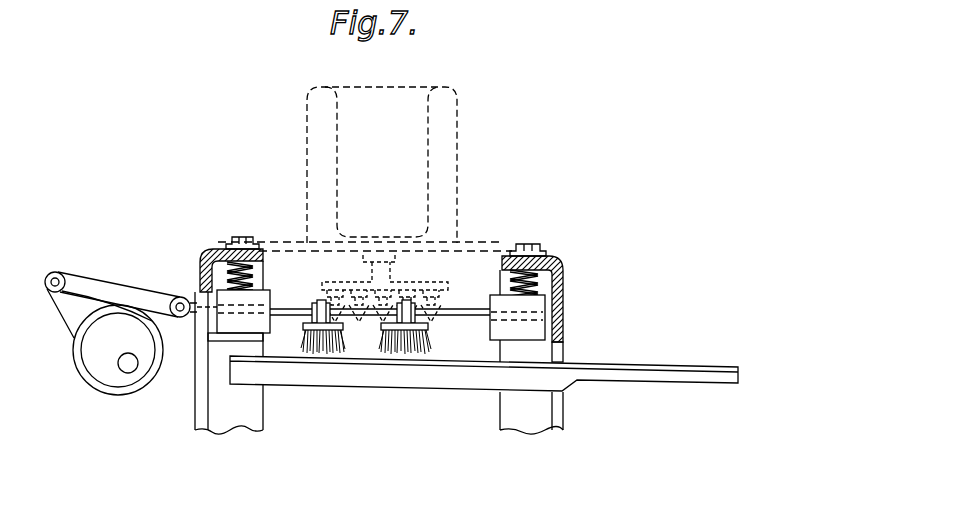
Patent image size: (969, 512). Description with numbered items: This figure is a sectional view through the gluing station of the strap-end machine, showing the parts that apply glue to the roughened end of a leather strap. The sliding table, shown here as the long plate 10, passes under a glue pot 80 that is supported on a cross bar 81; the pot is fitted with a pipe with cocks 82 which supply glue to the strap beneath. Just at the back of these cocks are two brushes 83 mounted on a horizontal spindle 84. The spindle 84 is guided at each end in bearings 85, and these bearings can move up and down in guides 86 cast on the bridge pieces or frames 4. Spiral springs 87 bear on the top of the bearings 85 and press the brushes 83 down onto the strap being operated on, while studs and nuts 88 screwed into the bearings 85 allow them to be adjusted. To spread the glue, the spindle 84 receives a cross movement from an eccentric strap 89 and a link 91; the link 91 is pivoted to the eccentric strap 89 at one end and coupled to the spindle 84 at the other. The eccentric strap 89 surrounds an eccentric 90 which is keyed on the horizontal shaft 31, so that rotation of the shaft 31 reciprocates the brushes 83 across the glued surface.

The frames 4 is at (379, 347).
The tray 10 is at (637, 372).
The horizontal shaft 31 is at (128, 367).
The glue pot 80 is at (382, 165).
The cross bar 81 is at (480, 246).
The pipe with cocks 82 is at (386, 299).
The brushes 83 is at (400, 346).
The horizontal spindle 84 is at (473, 312).
The bearings 85 is at (381, 301).
The guides 86 is at (556, 352).
The spiral springs 87 is at (564, 270).
The studs and nuts 88 is at (386, 234).
The eccentric strap 89 is at (73, 318).
The eccentric 90 is at (118, 350).
The link 91 is at (118, 290).